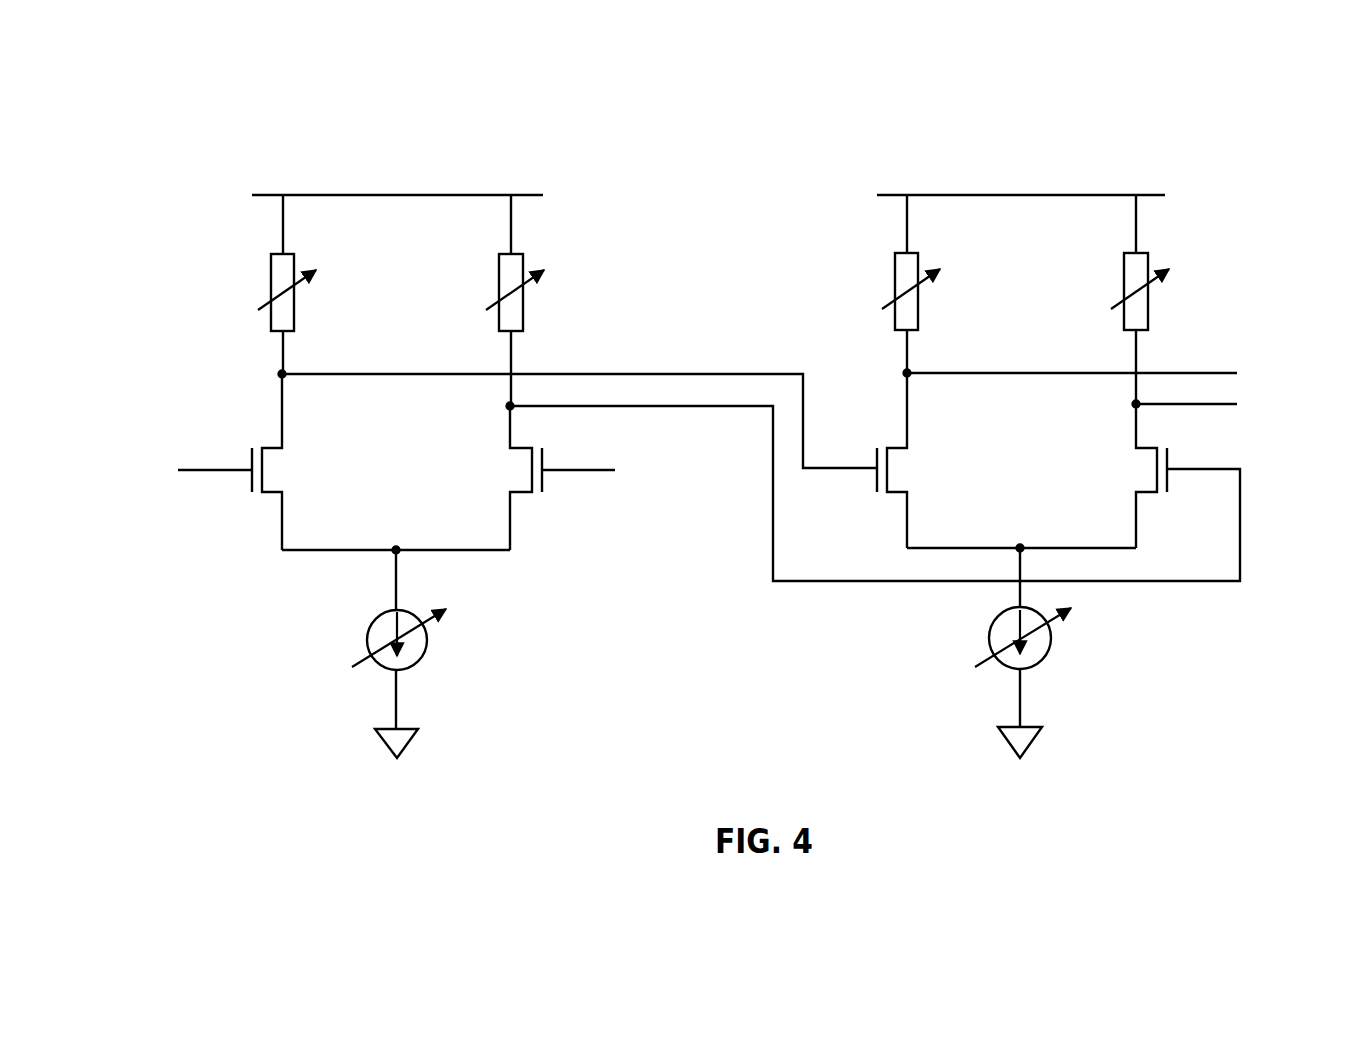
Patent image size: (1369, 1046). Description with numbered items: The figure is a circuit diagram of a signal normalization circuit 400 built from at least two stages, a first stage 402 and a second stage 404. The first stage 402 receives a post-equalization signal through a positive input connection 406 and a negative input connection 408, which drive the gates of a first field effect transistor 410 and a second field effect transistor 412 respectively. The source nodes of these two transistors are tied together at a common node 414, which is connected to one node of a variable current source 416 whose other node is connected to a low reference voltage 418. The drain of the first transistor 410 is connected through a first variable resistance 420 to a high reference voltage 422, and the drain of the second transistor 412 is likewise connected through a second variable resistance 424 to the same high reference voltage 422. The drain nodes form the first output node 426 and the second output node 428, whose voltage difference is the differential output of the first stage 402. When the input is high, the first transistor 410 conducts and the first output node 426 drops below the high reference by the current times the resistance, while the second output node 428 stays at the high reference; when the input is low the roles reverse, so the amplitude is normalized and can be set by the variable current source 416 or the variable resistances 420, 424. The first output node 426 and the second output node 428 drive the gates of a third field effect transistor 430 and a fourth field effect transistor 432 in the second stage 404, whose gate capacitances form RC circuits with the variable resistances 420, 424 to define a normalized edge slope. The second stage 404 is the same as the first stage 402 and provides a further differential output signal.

The signal normalization circuit 400 is at (262, 106).
The first stage 402 is at (430, 173).
The second stage 404 is at (1054, 173).
The INP1 connection 406 is at (217, 472).
The INN1 connection 408 is at (575, 472).
The INP1 field effect transistor 410 is at (278, 472).
The INN1 field effect transistor 412 is at (513, 473).
The common source node 414 is at (396, 550).
The variable current source 416 is at (378, 615).
The low reference voltage 418 is at (408, 742).
The INP1 variable resistance 420 is at (268, 280).
The high reference voltage 422 is at (333, 195).
The INN1 variable resistance 424 is at (497, 280).
The OUTP1 node 426 is at (287, 373).
The OUTN1 node 428 is at (517, 408).
The INP2 field effect transistor 430 is at (903, 472).
The INN2 field effect transistor 432 is at (1138, 472).